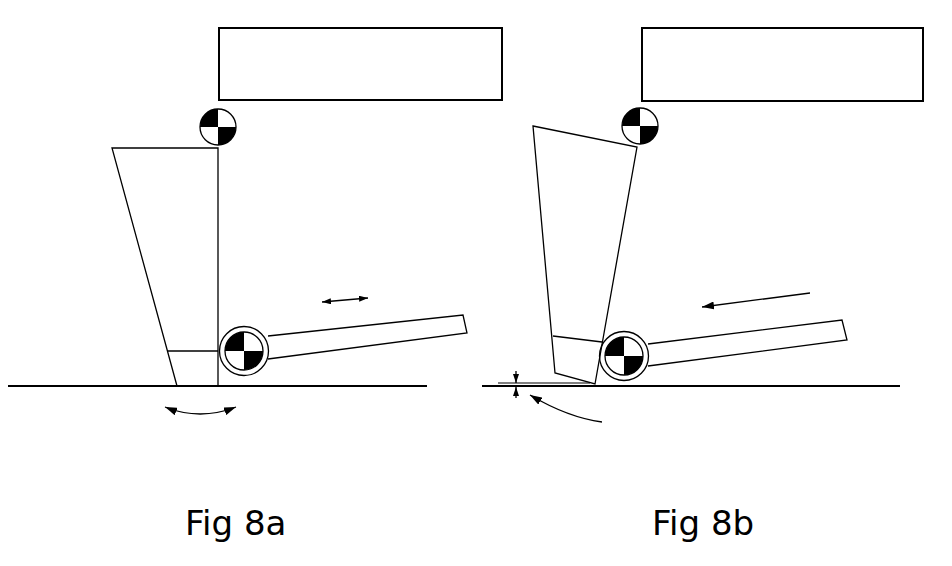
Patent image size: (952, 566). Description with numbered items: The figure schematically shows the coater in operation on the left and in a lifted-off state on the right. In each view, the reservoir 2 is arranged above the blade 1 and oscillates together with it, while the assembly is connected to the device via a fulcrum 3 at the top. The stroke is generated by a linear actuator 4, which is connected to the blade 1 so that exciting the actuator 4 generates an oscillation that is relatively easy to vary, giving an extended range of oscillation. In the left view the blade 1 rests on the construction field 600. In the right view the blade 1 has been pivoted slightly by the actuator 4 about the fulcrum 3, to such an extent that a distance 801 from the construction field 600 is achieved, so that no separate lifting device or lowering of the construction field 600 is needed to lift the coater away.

In FIG. 8a, the blade 1 is at (185, 368).
In FIG. 8b, the blade 1 is at (568, 355).
In FIG. 8a, the reservoir 2 is at (148, 232).
In FIG. 8b, the reservoir 2 is at (560, 232).
In FIG. 8a, the fulcrum 3 is at (236, 132).
In FIG. 8b, the fulcrum 3 is at (658, 132).
In FIG. 8a, the linear actuator 4 is at (413, 332).
In FIG. 8b, the linear actuator 4 is at (835, 330).
In FIG. 8b, the construction field 600 is at (792, 413).
In FIG. 8b, the distance 801 is at (510, 398).